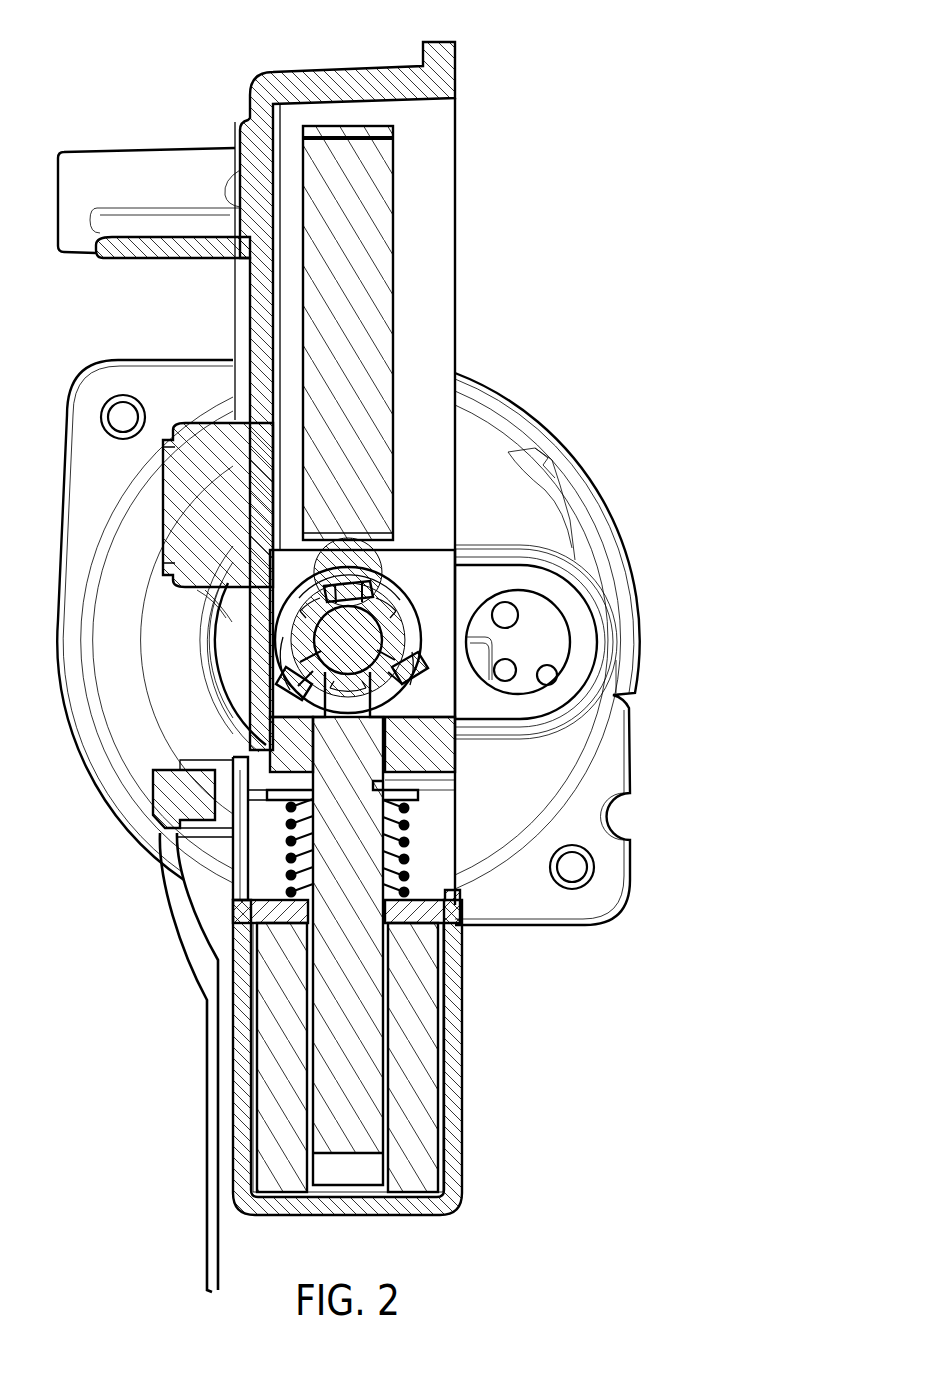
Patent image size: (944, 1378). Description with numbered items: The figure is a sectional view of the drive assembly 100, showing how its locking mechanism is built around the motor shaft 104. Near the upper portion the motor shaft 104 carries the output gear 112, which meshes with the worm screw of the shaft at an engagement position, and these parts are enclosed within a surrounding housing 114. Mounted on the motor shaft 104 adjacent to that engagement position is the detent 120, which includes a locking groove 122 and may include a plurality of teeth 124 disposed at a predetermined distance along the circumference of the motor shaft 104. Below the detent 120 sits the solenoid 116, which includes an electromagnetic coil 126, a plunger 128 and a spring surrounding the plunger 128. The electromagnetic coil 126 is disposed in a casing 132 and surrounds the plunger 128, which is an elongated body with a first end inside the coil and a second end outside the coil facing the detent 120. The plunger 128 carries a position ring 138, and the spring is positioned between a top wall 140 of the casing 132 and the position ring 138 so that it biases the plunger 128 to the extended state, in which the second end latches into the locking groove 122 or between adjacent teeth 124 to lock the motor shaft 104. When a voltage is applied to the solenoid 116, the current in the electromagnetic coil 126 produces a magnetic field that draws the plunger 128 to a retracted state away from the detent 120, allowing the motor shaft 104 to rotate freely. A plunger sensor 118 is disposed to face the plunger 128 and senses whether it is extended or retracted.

The drive assembly 100 is at (561, 70).
The motor shaft 104 is at (350, 647).
The output gear 112 is at (353, 226).
The housing 114 is at (307, 68).
The solenoid 116 is at (466, 1004).
The plunger sensor 118 is at (172, 914).
The detent 120 is at (414, 606).
The locking groove 122 is at (310, 598).
The teeth 124 is at (379, 684).
The electromagnetic coil 126 is at (280, 1128).
The plunger 128 is at (345, 805).
The casing 132 is at (455, 1110).
The position ring 138 is at (410, 795).
The top wall 140 is at (423, 896).